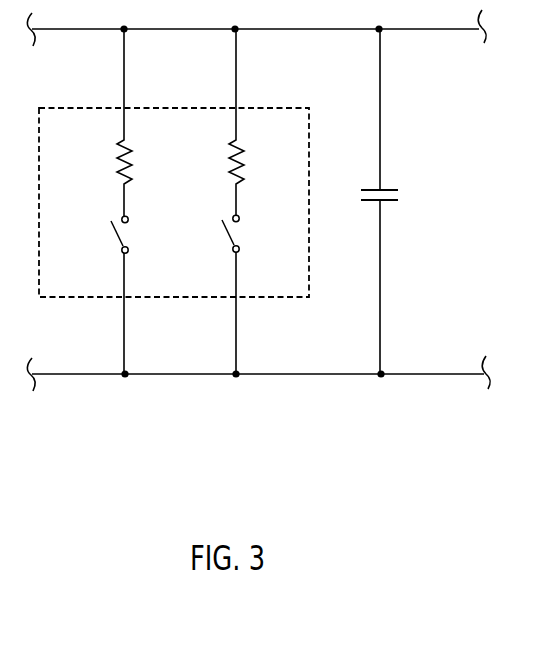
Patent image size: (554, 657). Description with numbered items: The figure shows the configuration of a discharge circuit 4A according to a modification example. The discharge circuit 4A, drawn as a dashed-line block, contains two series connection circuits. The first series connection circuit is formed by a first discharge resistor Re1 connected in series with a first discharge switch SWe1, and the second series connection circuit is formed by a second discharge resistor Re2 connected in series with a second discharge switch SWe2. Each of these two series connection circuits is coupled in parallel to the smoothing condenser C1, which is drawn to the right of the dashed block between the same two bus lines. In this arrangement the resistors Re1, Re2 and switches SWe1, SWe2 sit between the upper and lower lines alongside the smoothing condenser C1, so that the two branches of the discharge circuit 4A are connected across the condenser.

The discharge circuit 4A is at (278, 298).
The second discharge resistor Re2 is at (102, 162).
The first discharge resistor Re1 is at (254, 162).
The second discharge switch SWe2 is at (94, 234).
The first discharge switch SWe1 is at (255, 233).
The smoothing condenser C1 is at (394, 196).